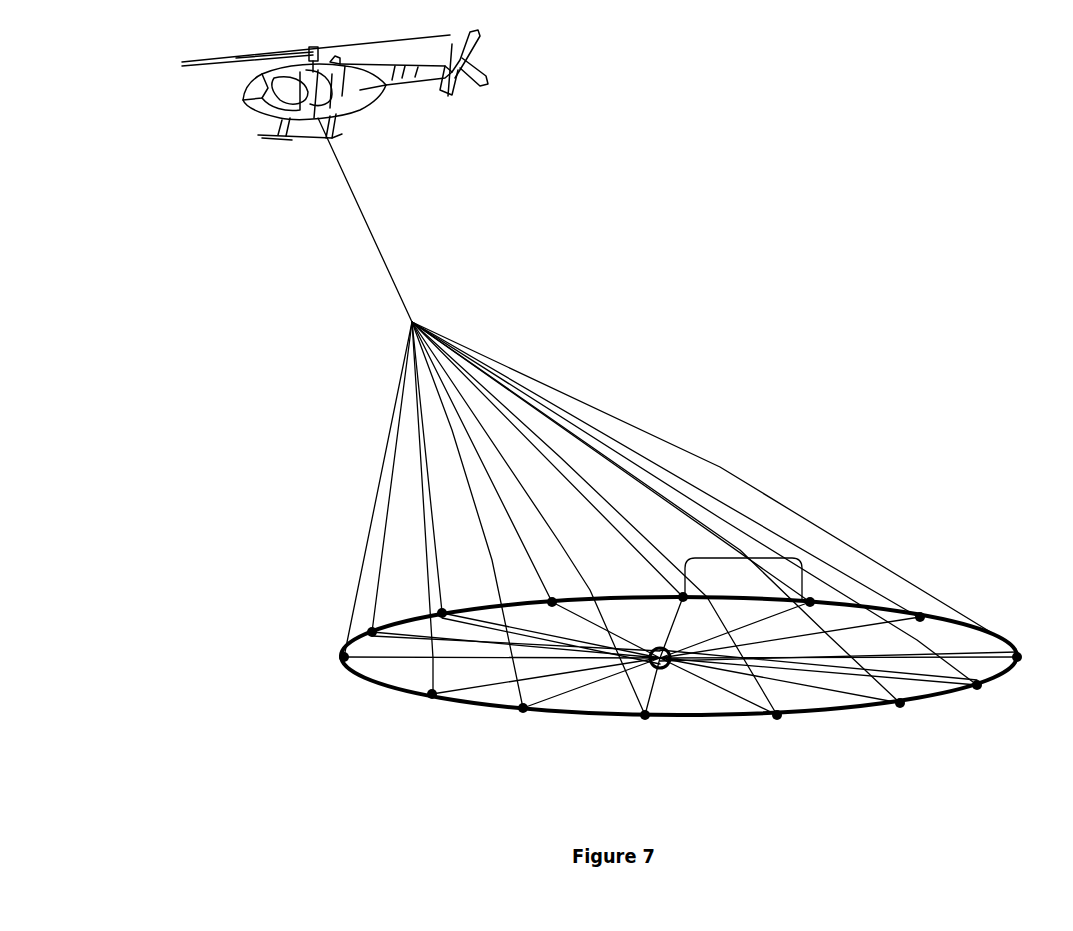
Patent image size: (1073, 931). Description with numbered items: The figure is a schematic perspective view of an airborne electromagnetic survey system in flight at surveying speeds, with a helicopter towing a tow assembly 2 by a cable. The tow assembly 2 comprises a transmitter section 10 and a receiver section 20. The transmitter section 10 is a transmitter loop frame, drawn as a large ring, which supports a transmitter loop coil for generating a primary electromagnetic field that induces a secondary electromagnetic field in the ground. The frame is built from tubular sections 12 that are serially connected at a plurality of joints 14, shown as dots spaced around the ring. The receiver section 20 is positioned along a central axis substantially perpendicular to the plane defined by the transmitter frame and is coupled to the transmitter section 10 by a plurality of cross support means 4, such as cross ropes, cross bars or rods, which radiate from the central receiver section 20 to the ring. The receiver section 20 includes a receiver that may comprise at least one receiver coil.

The tow assembly 2 is at (310, 412).
The cross support means 4 is at (403, 655).
The transmitter section 10 is at (1005, 626).
The tubular sections 12 is at (752, 558).
The joints 14 is at (813, 592).
The receiver section 20 is at (656, 643).